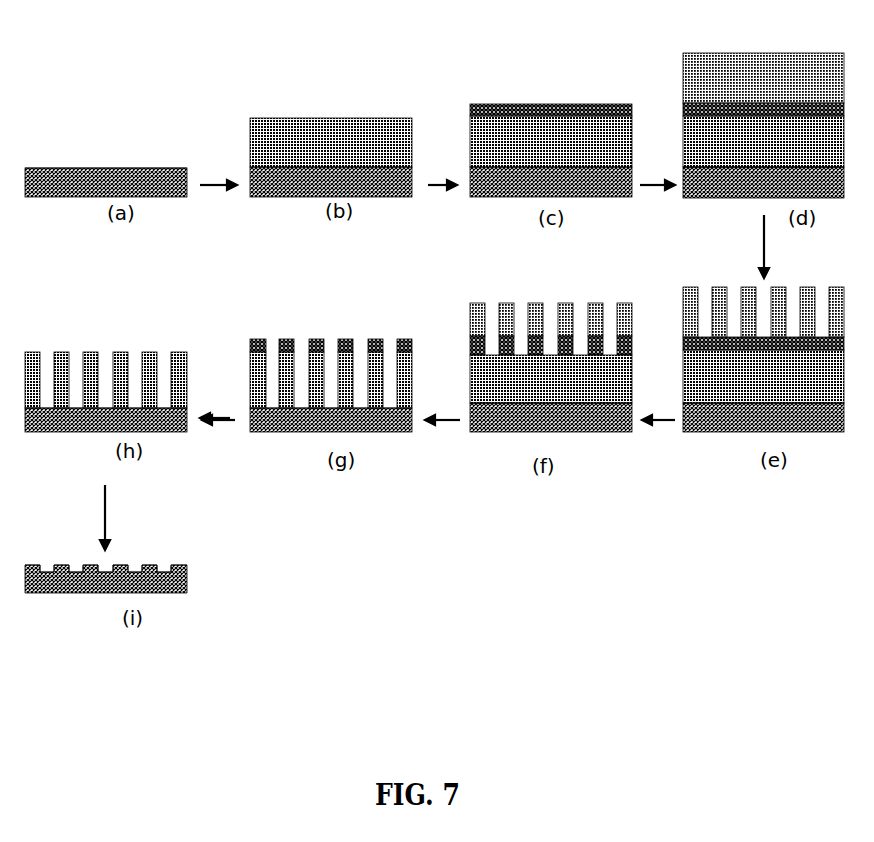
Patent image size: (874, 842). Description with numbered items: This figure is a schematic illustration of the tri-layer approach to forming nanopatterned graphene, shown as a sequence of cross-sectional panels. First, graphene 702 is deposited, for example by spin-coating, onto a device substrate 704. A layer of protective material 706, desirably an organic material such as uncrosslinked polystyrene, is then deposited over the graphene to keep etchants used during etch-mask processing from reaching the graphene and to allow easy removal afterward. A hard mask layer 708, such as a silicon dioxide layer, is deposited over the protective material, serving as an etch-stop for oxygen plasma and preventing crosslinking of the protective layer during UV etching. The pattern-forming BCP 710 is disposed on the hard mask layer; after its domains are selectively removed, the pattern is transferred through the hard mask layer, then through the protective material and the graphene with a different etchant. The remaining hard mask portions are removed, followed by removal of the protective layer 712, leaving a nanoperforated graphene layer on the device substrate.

The graphene 702 is at (88, 167).
The device substrate 704 is at (76, 187).
The protective material 706 is at (343, 153).
The hard mask layer 708 is at (545, 105).
The pattern-forming BCP 710 is at (757, 53).
The protective layer 712 is at (185, 565).